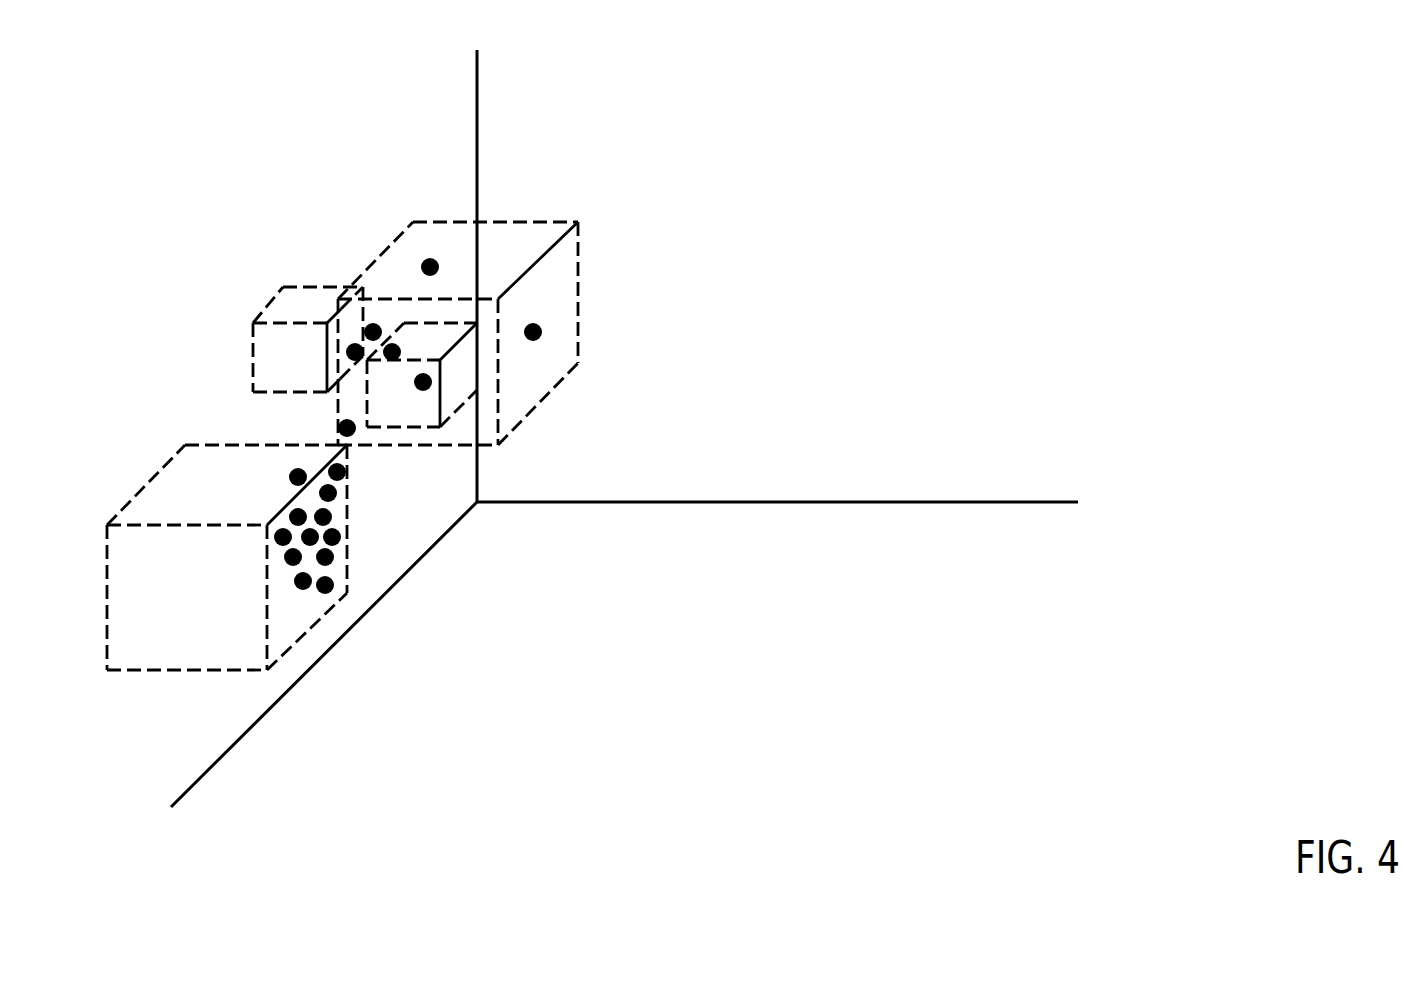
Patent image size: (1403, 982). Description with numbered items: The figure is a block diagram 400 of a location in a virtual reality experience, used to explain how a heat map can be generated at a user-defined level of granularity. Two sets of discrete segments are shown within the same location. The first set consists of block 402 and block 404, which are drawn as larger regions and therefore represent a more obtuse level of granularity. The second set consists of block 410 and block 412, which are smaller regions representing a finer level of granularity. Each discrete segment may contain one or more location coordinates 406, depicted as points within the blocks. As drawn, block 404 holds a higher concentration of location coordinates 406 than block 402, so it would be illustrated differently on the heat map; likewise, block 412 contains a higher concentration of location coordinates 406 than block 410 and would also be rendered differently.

The block diagram 400 is at (1008, 702).
The block 402 is at (579, 275).
The block 404 is at (349, 513).
The location coordinates 406 is at (438, 266).
The block 410 is at (253, 323).
The block 412 is at (453, 408).